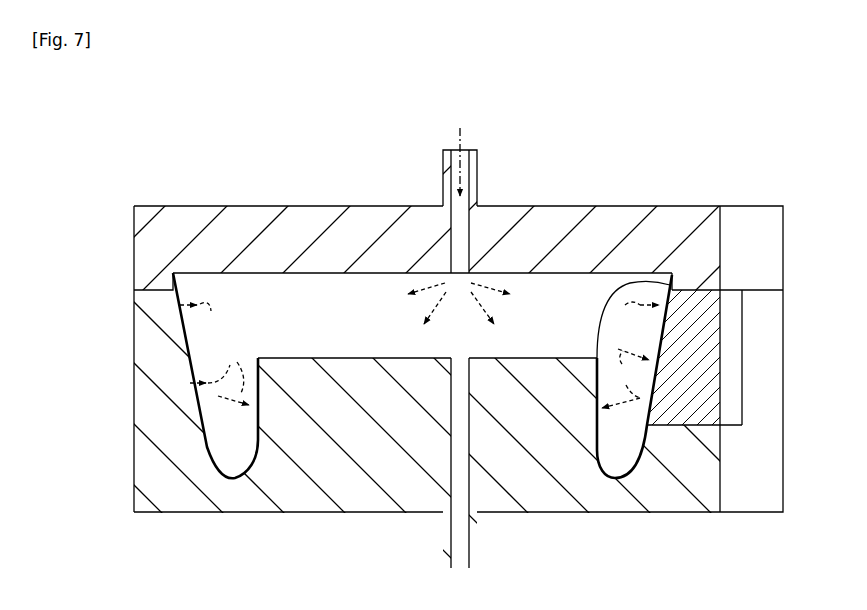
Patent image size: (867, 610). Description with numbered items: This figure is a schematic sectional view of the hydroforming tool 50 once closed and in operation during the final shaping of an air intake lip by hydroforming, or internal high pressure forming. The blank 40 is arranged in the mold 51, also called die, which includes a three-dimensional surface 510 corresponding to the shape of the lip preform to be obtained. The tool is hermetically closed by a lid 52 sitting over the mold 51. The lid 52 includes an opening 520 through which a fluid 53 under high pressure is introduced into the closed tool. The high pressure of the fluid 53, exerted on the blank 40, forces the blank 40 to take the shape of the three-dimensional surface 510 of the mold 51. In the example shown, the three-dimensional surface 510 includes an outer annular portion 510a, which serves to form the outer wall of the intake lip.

The hydroforming tool 50 is at (722, 146).
The mold 51 is at (143, 472).
The lid 52 is at (143, 265).
The fluid 53 is at (462, 131).
The opening 520 is at (450, 150).
The blank 40 is at (600, 353).
The three-dimensional surface 510 is at (258, 420).
The outer annular portion 510a is at (191, 383).